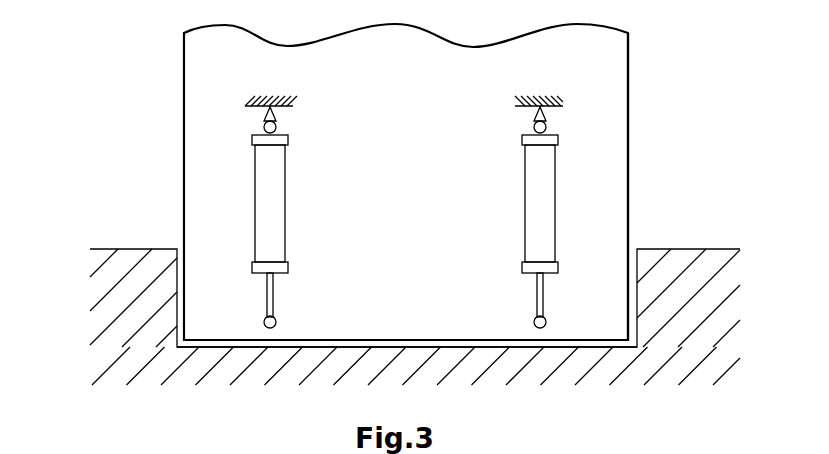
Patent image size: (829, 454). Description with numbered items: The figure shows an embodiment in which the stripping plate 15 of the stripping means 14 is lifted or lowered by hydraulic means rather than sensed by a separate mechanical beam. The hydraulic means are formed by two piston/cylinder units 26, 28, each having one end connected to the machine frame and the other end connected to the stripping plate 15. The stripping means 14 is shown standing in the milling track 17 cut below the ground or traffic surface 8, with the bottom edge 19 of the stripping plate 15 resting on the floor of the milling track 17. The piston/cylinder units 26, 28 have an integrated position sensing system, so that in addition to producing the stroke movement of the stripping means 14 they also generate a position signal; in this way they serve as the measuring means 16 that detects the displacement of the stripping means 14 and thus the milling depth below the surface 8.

The stripping means 14 is at (155, 97).
The piston/cylinder unit 26 is at (268, 223).
The piston/cylinder unit 28 is at (542, 192).
The measuring means 16 is at (570, 189).
The ground or traffic surface 8 is at (683, 249).
The stripping plate 15 is at (430, 247).
The bottom edge 19 is at (341, 345).
The milling track 17 is at (455, 340).